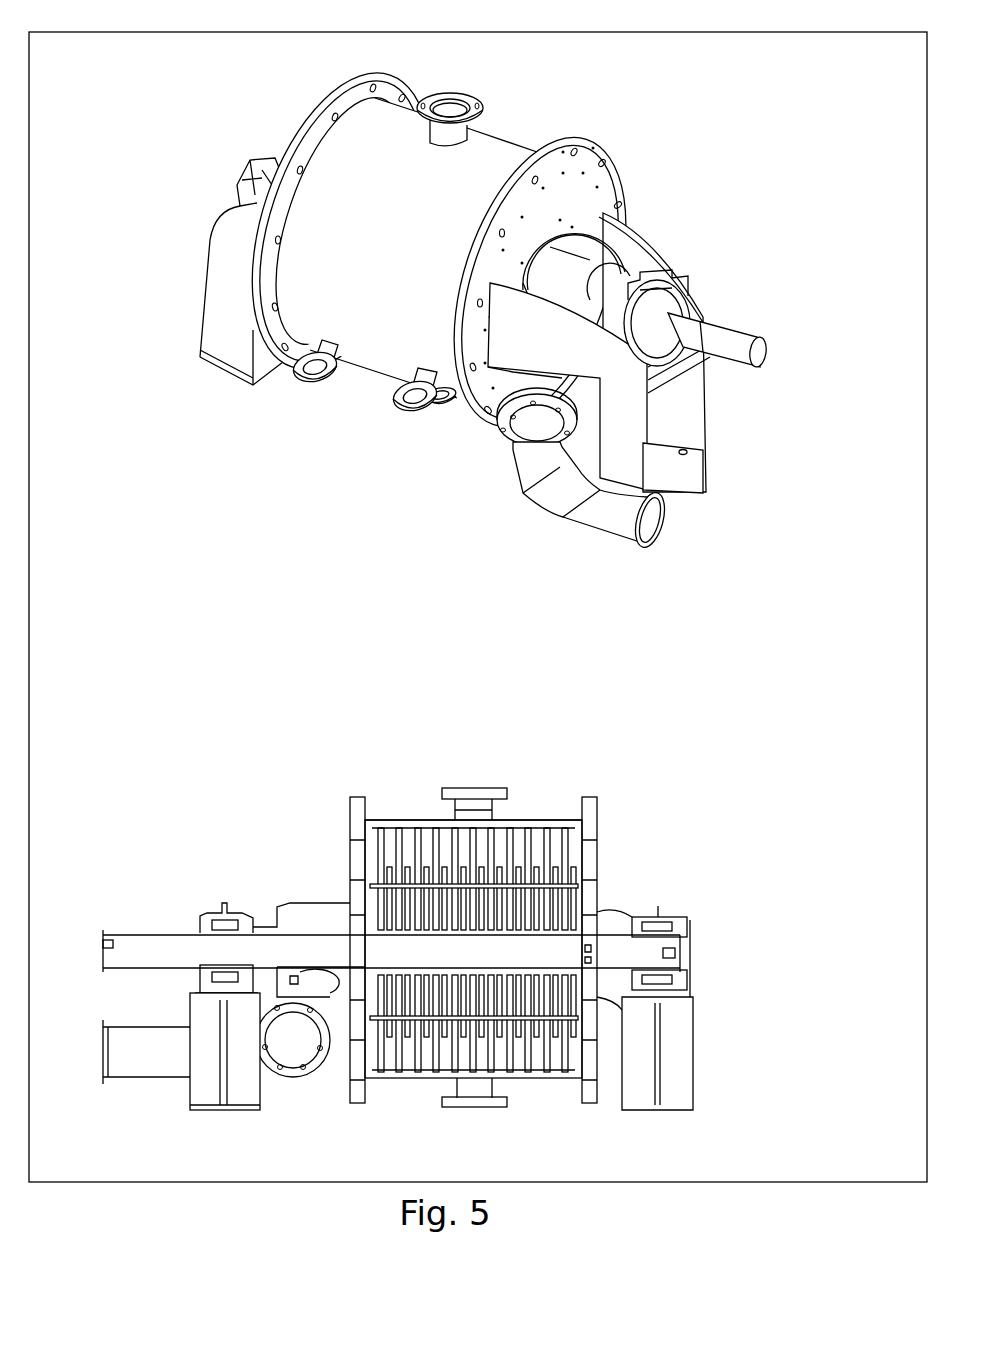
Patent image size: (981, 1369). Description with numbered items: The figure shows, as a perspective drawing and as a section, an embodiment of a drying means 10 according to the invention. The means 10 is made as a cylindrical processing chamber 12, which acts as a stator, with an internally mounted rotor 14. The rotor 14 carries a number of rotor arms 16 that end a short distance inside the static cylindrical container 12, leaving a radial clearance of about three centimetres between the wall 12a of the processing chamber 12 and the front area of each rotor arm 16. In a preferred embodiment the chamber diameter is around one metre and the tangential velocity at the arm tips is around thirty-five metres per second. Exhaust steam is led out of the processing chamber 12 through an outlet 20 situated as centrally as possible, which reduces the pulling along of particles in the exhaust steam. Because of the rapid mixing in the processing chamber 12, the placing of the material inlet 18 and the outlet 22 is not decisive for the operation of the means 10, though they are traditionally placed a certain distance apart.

The drying means 10 is at (412, 602).
The cylindrical processing chamber 12 is at (424, 823).
The wall of the processing chamber 12a is at (393, 826).
The rotor 14 is at (606, 948).
The rotor arms 16 is at (500, 870).
The material inlet 18 is at (458, 747).
The outlet 20 is at (653, 513).
The material outlet 22 is at (447, 405).